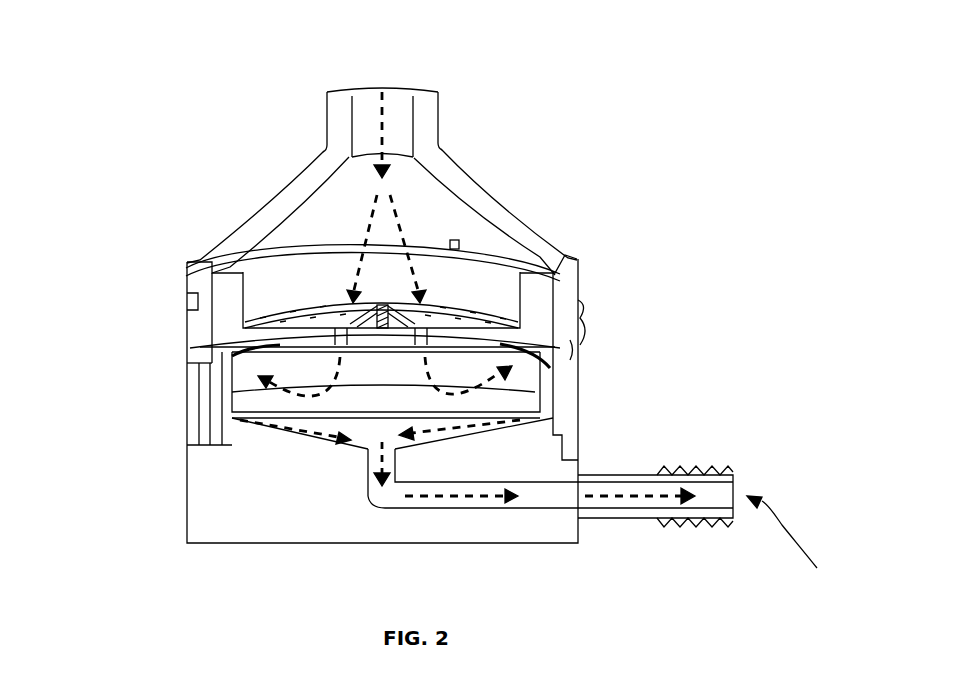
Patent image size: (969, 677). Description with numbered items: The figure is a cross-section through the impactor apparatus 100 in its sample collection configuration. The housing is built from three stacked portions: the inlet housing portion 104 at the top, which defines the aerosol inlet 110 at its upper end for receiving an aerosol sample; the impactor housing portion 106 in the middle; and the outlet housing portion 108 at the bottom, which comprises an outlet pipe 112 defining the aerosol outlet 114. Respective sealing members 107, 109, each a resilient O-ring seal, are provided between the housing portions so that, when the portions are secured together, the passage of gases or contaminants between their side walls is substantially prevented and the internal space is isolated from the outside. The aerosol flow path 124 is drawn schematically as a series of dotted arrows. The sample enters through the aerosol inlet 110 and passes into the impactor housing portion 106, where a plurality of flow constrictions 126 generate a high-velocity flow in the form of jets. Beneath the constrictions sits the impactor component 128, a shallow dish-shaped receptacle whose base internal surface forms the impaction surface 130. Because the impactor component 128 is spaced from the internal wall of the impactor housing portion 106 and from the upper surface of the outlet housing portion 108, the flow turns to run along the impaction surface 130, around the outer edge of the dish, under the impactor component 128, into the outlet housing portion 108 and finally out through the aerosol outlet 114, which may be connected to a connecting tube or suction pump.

The impactor apparatus 100 is at (192, 120).
The inlet housing portion 104 is at (485, 197).
The impactor housing portion 106 is at (578, 328).
The sealing member 107 is at (550, 440).
The outlet housing portion 108 is at (187, 512).
The sealing member 109 is at (210, 292).
The aerosol inlet 110 is at (368, 81).
The outlet pipe 112 is at (620, 472).
The aerosol outlet 114 is at (809, 550).
The aerosol flow path 124 is at (353, 228).
The flow constrictions 126 is at (330, 335).
The impactor component 128 is at (215, 395).
The impaction surface 130 is at (378, 407).